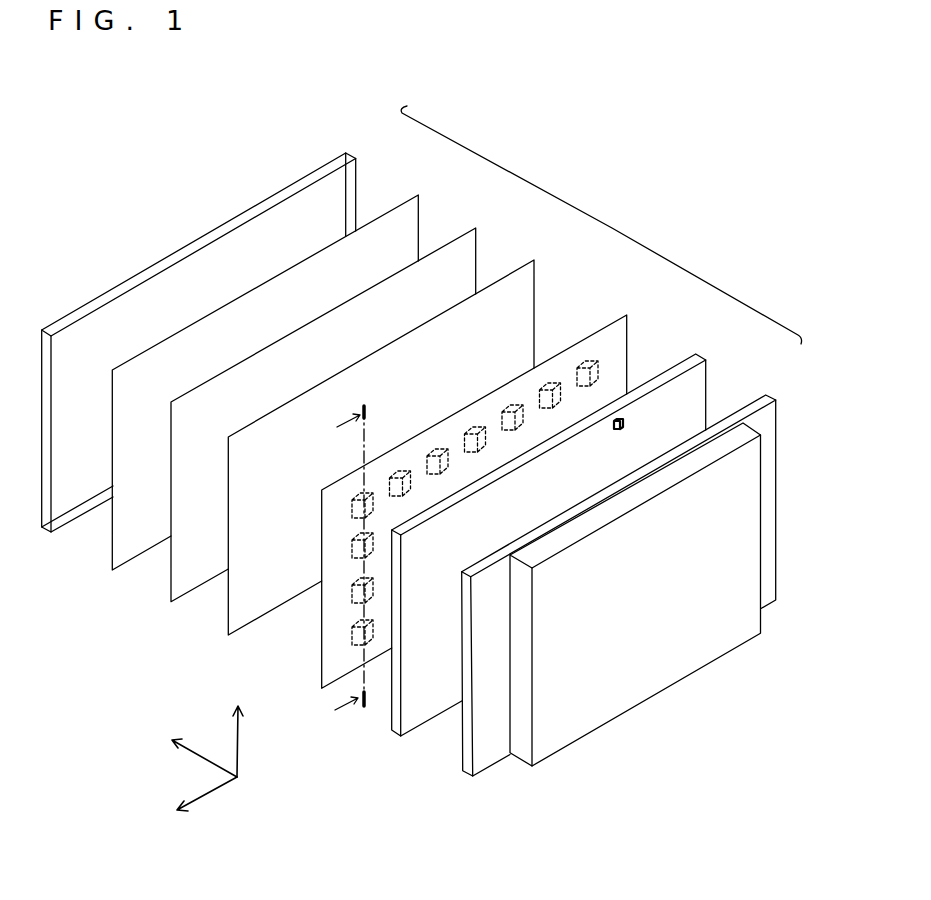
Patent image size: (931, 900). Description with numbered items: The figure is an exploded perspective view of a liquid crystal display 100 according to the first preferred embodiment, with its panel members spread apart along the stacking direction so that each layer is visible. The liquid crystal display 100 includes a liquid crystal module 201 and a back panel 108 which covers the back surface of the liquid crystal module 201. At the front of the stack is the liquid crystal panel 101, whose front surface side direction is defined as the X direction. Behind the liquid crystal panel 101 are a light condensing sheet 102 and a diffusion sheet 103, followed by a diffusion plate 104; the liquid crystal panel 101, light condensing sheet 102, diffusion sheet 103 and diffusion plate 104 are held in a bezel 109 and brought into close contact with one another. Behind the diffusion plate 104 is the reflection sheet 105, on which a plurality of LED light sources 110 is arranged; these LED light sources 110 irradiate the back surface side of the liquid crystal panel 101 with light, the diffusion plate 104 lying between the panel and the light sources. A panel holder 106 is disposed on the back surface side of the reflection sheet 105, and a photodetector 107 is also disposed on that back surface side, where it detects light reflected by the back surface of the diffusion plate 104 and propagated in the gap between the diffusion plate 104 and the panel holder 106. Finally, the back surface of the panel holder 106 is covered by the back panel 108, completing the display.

The liquid crystal display 100 is at (103, 106).
The liquid crystal panel 101 is at (127, 322).
The light condensing sheet 102 is at (408, 218).
The diffusion sheet 103 is at (465, 253).
The diffusion plate 104 is at (521, 285).
The reflection sheet 105 is at (613, 338).
The panel holder 106 is at (693, 385).
The photodetector 107 is at (625, 419).
The back panel 108 is at (637, 677).
The bezel 109 is at (205, 238).
The LED light sources 110 is at (587, 360).
The liquid crystal module 201 is at (603, 225).